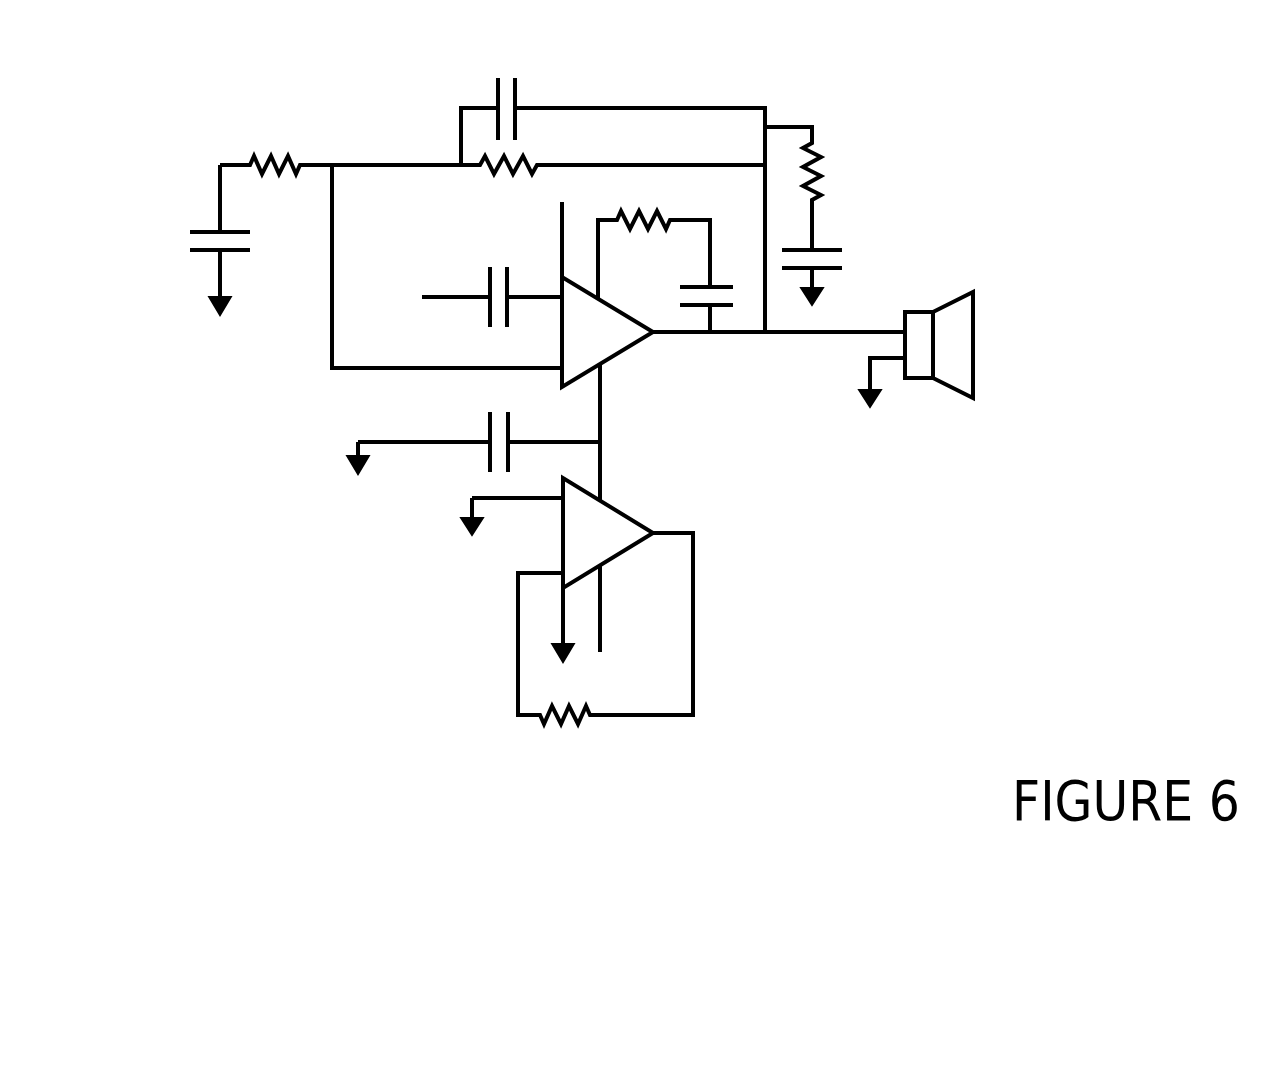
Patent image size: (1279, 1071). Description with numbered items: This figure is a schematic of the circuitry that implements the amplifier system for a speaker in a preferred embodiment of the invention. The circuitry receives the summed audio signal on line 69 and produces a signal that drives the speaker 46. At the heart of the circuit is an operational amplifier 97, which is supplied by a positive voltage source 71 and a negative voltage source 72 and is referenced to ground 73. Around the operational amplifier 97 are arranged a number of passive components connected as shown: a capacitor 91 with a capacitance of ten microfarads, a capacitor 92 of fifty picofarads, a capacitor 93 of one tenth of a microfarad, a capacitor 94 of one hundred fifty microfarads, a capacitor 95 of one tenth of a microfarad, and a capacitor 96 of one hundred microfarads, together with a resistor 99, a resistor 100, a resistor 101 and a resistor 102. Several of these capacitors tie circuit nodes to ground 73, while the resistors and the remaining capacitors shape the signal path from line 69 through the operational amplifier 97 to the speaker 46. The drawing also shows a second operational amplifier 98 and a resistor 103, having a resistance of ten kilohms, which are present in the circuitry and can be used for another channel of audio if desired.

The speaker 46 is at (963, 282).
The line 69 is at (422, 307).
The positive voltage source 71 is at (572, 212).
The negative voltage source 72 is at (610, 622).
The ground 73 is at (217, 310).
The capacitor 91 is at (250, 229).
The capacitor 92 is at (510, 73).
The capacitor 93 is at (500, 262).
The capacitor 94 is at (682, 296).
The capacitor 95 is at (852, 238).
The capacitor 96 is at (500, 415).
The operational amplifier 97 is at (550, 333).
The operational amplifier 98 is at (552, 538).
The resistor 99 is at (277, 147).
The resistor 100 is at (503, 185).
The resistor 101 is at (658, 212).
The resistor 102 is at (832, 165).
The resistor 103 is at (572, 733).